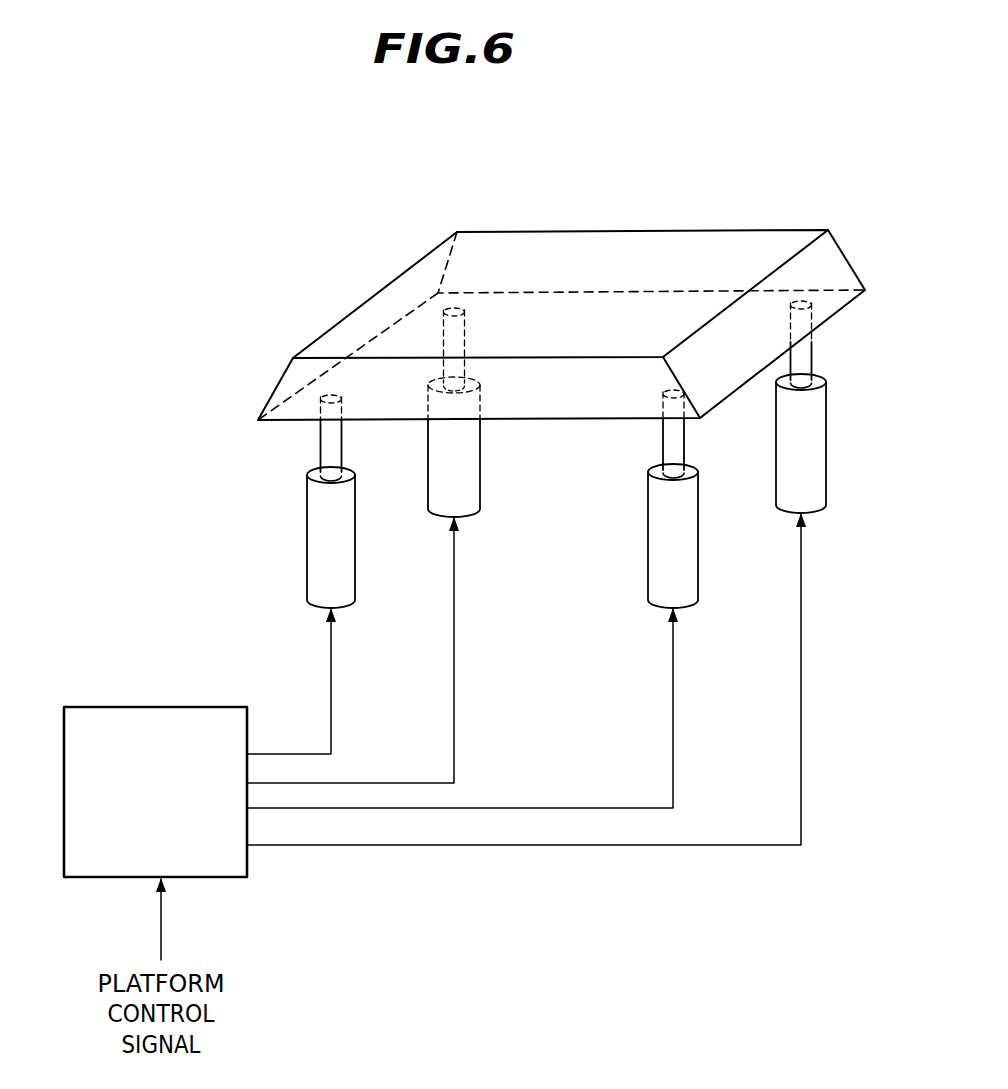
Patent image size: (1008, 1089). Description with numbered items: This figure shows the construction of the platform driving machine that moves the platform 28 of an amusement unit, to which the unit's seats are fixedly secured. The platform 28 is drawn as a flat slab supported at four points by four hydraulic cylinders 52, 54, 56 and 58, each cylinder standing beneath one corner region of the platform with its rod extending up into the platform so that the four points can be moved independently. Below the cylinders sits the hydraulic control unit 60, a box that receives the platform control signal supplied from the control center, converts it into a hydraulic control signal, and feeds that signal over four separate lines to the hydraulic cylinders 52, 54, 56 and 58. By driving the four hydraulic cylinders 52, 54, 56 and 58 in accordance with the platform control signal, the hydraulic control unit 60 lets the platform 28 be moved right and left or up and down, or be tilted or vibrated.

The platform 28 is at (725, 236).
The hydraulic cylinder 52 is at (310, 524).
The hydraulic cylinder 54 is at (462, 468).
The hydraulic cylinder 56 is at (820, 477).
The hydraulic cylinder 58 is at (662, 565).
The hydraulic control unit 60 is at (138, 707).